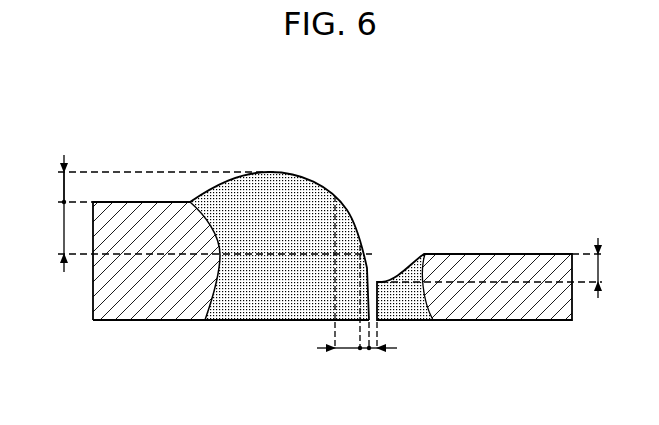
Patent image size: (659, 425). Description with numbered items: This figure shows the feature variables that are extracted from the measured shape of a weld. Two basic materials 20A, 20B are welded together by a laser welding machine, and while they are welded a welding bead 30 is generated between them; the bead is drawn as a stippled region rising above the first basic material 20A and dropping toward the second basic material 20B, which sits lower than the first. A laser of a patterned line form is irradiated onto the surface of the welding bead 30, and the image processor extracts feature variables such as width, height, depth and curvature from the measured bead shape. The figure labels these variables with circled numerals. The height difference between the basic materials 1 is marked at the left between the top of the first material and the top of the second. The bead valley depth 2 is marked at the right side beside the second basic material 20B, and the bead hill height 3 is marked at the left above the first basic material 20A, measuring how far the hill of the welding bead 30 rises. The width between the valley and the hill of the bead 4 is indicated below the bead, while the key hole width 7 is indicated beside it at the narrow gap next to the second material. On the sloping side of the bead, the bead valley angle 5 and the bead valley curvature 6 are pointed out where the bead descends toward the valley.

The basic material 20A is at (158, 317).
The basic material 20B is at (540, 317).
The welding bead 30 is at (226, 317).
The height difference between the basic materials 1 is at (52, 213).
The bead valley depth 2 is at (612, 268).
The bead hill height 3 is at (51, 187).
The width between the valley and the hill of the bead 4 is at (339, 287).
The bead valley angle 5 is at (348, 222).
The bead valley curvature 6 is at (333, 238).
The key hole width 7 is at (378, 350).